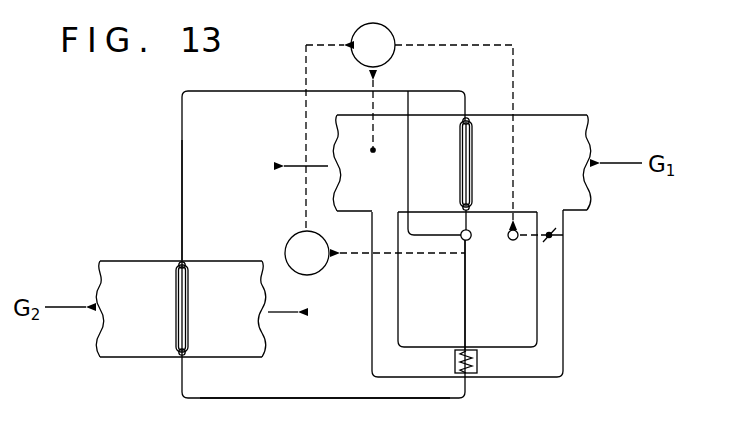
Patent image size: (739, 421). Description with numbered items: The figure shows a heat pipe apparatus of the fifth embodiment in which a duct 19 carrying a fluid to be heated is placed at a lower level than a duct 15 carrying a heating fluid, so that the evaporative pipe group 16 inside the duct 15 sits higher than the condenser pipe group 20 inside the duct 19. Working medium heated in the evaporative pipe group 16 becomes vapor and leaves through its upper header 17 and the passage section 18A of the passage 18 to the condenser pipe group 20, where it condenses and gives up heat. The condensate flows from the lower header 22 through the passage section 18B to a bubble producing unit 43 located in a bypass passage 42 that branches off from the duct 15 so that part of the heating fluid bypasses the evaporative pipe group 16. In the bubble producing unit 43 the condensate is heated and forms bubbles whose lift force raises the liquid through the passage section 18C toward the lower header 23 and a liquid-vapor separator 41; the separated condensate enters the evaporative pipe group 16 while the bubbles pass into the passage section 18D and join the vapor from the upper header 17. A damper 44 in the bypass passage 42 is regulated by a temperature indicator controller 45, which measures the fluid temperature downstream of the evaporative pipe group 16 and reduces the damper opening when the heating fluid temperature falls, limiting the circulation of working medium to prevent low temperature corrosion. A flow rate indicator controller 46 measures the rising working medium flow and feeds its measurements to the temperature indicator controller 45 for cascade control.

The duct 15 is at (560, 118).
The evaporative pipe group 16 is at (474, 152).
The upper header 17 is at (470, 121).
The passage 18 is at (181, 134).
The passage section 18A is at (184, 172).
The passage section 18B is at (320, 398).
The passage section 18C is at (465, 289).
The passage section 18D is at (409, 140).
The duct 19 is at (128, 261).
The condenser pipe group 20 is at (190, 288).
The lower header 22 is at (188, 354).
The lower header 23 is at (472, 207).
The liquid-vapor separator 41 is at (470, 241).
The bypass passage 42 is at (570, 316).
The bubble producing unit 43 is at (478, 362).
The damper 44 is at (564, 238).
The temperature indicator controller 45 is at (353, 33).
The flow rate indicator controller 46 is at (292, 236).